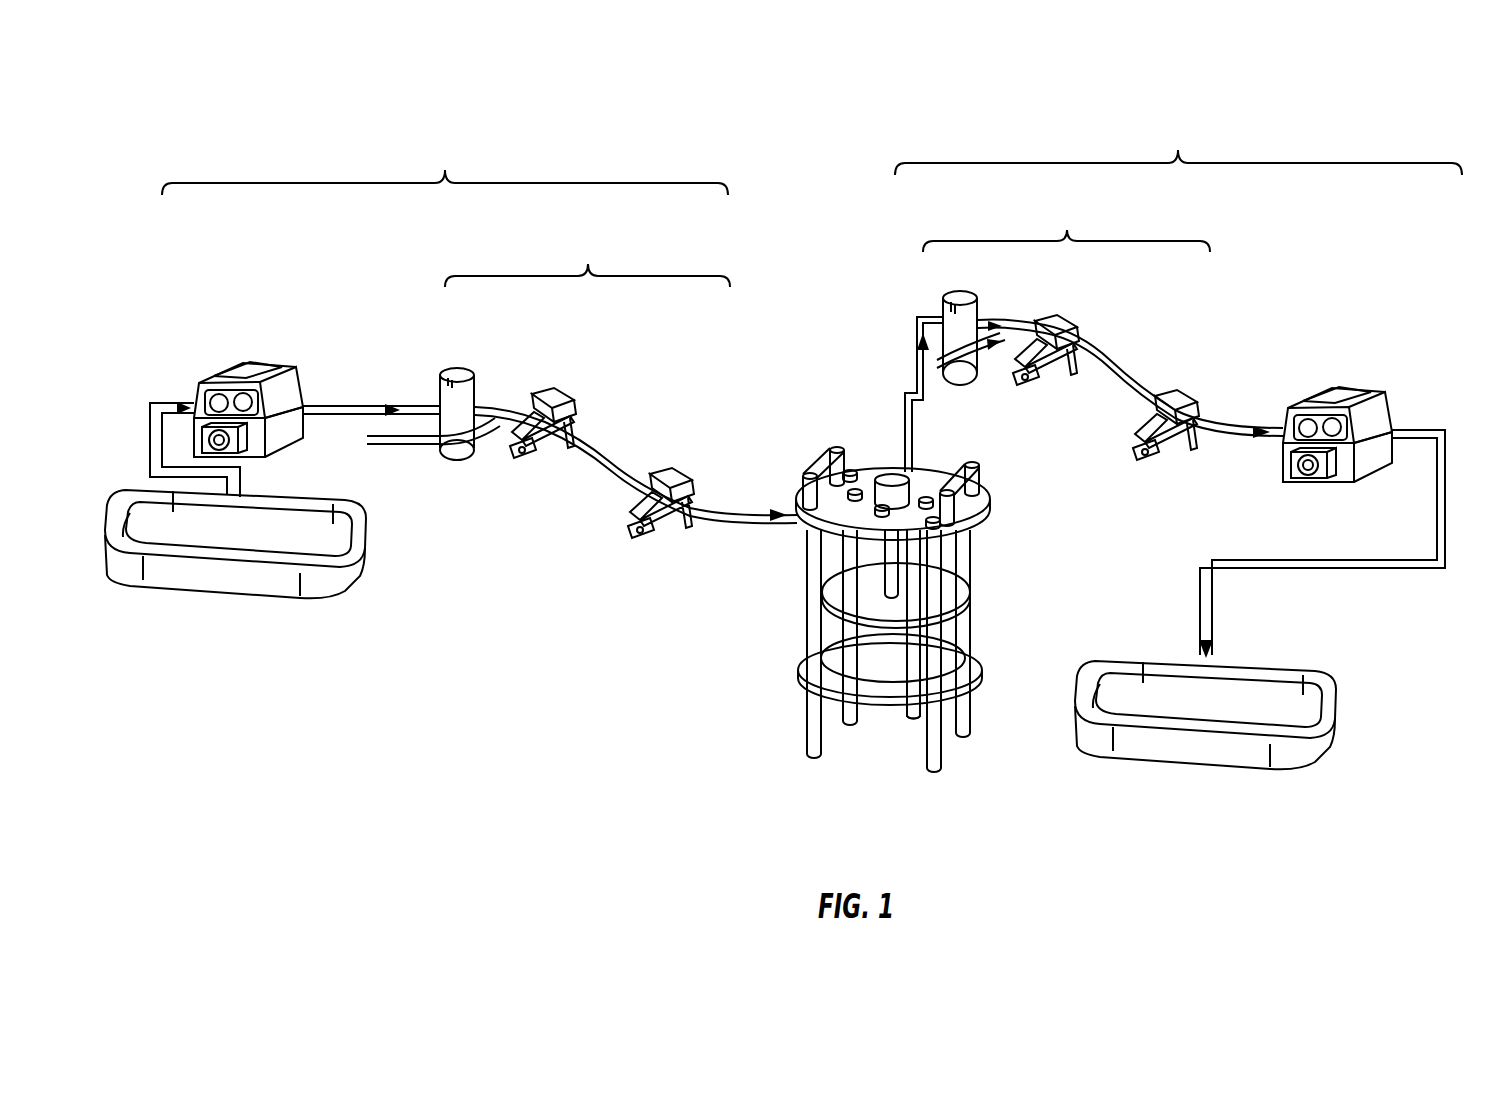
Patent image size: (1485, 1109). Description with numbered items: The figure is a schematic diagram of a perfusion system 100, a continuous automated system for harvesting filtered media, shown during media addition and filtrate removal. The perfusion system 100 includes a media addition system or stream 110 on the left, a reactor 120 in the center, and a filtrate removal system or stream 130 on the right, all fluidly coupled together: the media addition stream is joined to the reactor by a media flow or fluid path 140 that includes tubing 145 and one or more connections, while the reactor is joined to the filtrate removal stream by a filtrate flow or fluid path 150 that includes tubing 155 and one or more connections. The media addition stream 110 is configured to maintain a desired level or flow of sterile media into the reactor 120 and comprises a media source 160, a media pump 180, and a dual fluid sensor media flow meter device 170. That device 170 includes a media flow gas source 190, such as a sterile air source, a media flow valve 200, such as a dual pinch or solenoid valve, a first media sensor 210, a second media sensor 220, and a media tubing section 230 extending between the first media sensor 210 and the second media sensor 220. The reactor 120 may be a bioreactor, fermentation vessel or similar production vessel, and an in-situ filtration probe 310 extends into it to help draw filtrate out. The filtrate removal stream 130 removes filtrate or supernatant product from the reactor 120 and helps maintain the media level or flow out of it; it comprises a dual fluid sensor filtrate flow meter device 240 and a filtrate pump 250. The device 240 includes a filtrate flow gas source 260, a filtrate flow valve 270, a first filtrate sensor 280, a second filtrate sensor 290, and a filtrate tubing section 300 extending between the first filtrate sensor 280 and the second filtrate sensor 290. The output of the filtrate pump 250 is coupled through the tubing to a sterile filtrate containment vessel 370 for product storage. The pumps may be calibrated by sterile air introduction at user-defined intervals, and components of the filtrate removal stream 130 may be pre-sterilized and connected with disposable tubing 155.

The perfusion system 100 is at (837, 155).
The media addition system or stream 110 is at (445, 160).
The reactor 120 is at (866, 768).
The filtrate removal system or stream 130 is at (1178, 141).
The media flow or fluid path 140 is at (403, 385).
The tubing 145 is at (355, 400).
The filtrate flow or fluid path 150 is at (1258, 410).
The tubing 155 is at (1028, 327).
The media source 160 is at (257, 598).
The dual fluid sensor media flow meter system, apparatus or device 170 is at (587, 257).
The media pump 180 is at (217, 377).
The media flow gas source 190 is at (368, 438).
The media flow valve 200 is at (465, 378).
The first media sensor 210 is at (568, 405).
The second media sensor 220 is at (693, 470).
The media tubing section 230 is at (613, 455).
The dual fluid sensor filtrate flow meter system, apparatus or device 240 is at (1066, 223).
The filtrate pump 250 is at (1383, 390).
The filtrate flow gas source 260 is at (943, 380).
The filtrate flow valve 270 is at (965, 305).
The first filtrate sensor 280 is at (1075, 332).
The second filtrate sensor 290 is at (1193, 393).
The filtrate tubing section 300 is at (1122, 372).
The in-situ filtration probe 310 is at (910, 723).
The sterile filtrate containment vessel 370 is at (1280, 778).